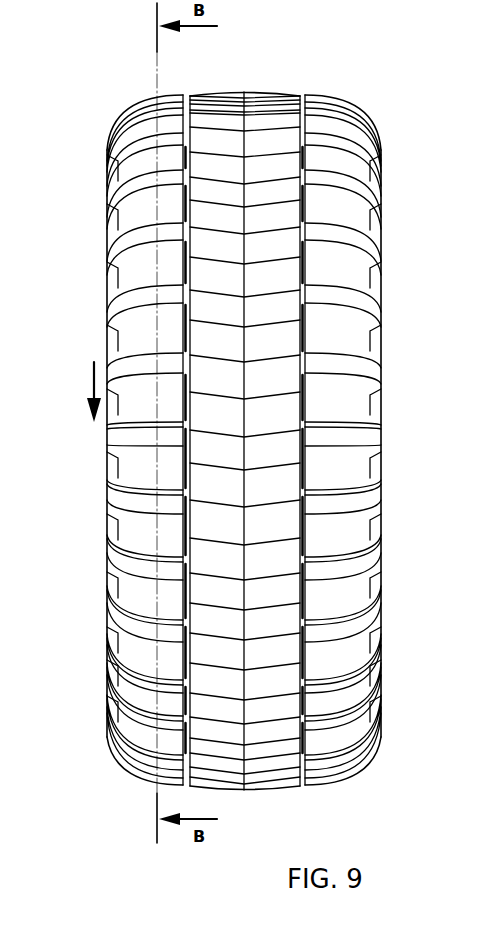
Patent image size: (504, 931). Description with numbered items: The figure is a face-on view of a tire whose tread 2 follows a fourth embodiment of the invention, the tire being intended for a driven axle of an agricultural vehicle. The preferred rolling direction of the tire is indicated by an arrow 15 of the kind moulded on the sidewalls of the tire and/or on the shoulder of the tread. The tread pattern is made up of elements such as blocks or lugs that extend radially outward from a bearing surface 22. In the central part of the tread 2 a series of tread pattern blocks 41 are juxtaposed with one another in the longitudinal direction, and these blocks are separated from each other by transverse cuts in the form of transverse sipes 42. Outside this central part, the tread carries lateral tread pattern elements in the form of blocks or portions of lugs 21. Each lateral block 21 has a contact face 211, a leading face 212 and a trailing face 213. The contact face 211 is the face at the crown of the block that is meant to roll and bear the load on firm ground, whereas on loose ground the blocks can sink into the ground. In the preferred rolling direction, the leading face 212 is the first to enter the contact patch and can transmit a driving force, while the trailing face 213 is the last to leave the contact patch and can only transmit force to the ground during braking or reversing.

The tread 2 is at (381, 97).
The arrows 15 is at (94, 377).
The lateral block 21 is at (170, 297).
The contact face 211 is at (120, 552).
The leading face 212 is at (122, 568).
The trailing face 213 is at (122, 525).
The bearing surface 22 is at (138, 594).
The tread pattern blocks 41 is at (270, 405).
The transverse sipes 42 is at (280, 500).